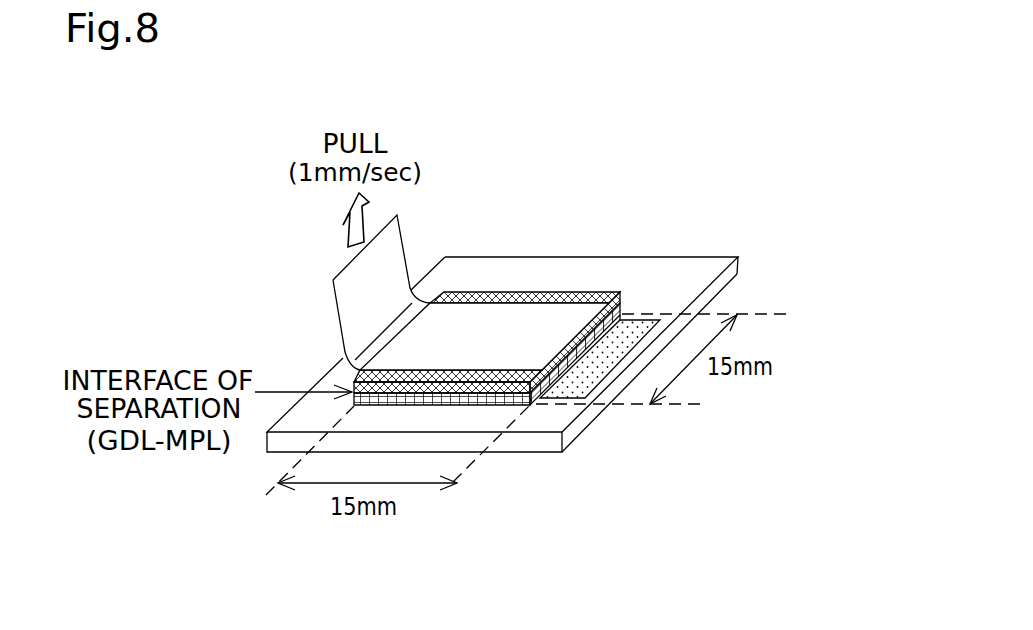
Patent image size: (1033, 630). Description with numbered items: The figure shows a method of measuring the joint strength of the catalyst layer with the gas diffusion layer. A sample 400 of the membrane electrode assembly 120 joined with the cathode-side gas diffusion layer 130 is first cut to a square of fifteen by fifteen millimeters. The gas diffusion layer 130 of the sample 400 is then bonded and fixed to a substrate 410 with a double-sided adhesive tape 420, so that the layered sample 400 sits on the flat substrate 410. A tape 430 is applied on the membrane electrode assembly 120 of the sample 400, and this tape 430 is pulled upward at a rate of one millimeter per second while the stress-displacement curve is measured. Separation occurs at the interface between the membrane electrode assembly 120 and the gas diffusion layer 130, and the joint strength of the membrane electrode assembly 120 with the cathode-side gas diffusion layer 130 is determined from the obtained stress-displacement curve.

The membrane electrode assembly 120 is at (343, 362).
The cathode-side gas diffusion layer 130 is at (511, 397).
The sample 400 is at (529, 351).
The substrate 410 is at (738, 256).
The double-sided adhesive tape 420 is at (633, 327).
The tape 430 is at (517, 323).